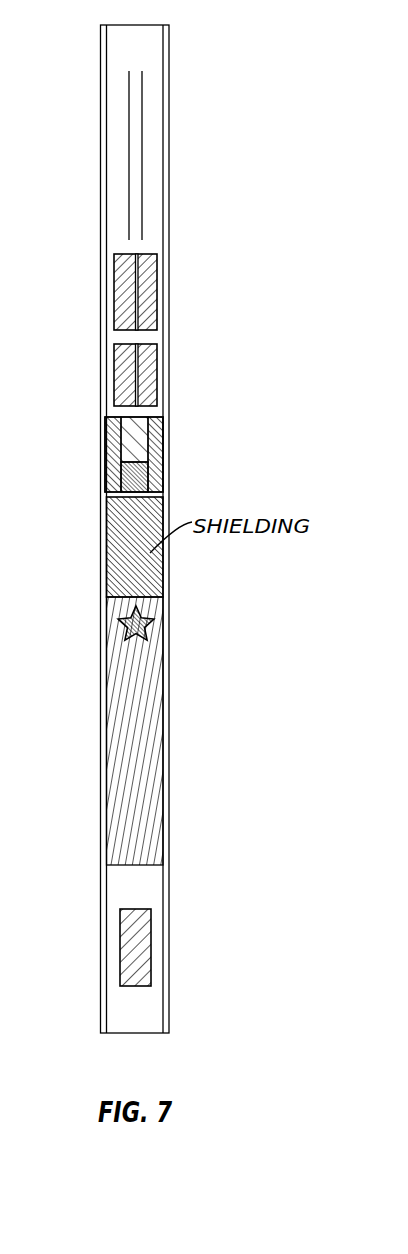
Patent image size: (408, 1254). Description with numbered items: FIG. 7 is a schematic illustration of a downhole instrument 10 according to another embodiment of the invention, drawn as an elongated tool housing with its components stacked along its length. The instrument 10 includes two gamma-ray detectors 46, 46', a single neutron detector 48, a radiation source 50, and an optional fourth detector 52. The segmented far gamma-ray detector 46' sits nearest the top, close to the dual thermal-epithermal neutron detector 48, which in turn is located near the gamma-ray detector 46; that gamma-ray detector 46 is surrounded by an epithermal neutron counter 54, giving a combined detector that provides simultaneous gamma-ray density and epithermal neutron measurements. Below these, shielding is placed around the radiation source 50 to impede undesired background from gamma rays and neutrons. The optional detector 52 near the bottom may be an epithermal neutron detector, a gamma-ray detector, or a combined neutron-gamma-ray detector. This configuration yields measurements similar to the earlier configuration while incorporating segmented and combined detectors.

The instrument 10 is at (215, 149).
The segmented far gamma-ray detector 46' is at (102, 292).
The dual thermal-epithermal neutron detector 48 is at (117, 372).
The epithermal neutron counter 54 is at (115, 445).
The gamma-ray detector 46 is at (97, 466).
The radiation source 50 is at (117, 613).
The fourth optional detector 52 is at (122, 948).